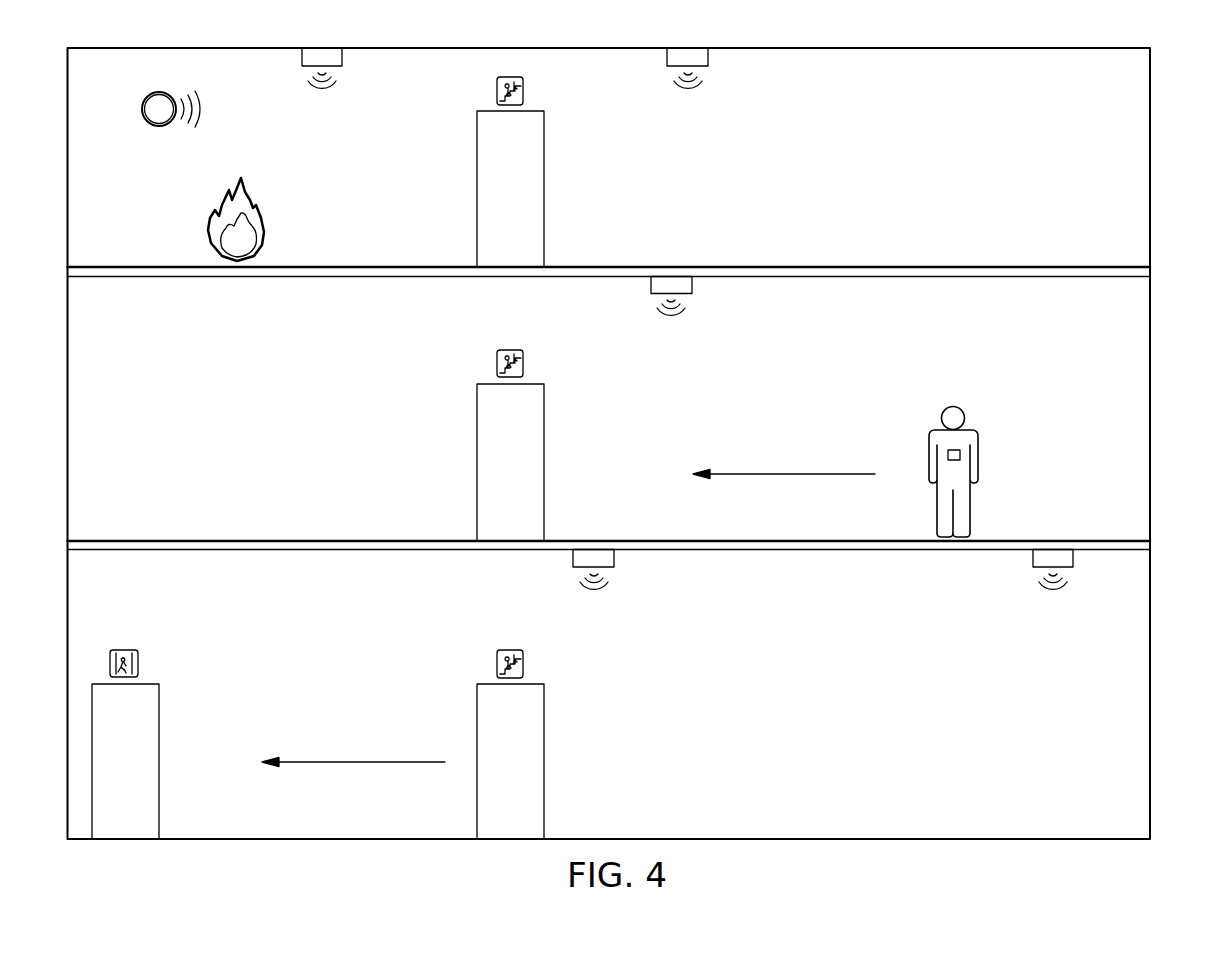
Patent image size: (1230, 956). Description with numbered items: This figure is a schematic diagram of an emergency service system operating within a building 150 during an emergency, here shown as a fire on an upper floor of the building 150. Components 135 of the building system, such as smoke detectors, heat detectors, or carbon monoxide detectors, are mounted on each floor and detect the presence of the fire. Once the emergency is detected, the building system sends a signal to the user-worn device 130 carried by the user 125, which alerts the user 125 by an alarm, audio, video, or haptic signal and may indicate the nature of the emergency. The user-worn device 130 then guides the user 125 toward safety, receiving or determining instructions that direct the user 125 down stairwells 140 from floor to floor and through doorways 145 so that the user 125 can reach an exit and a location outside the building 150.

The user 125 is at (954, 465).
The user-worn device 130 is at (960, 455).
The component of the building system 135 is at (342, 54).
The stairwell 140 is at (544, 190).
The doorway 145 is at (159, 762).
The building 150 is at (1150, 84).